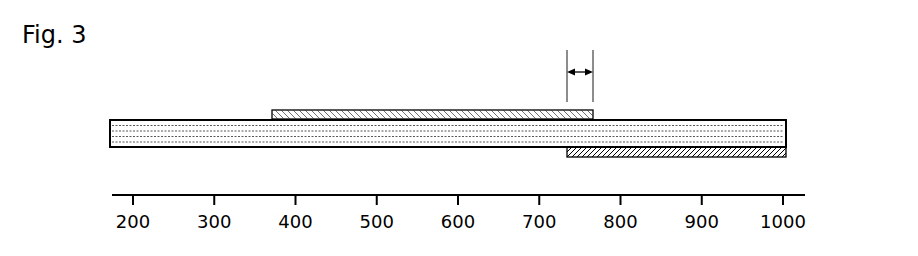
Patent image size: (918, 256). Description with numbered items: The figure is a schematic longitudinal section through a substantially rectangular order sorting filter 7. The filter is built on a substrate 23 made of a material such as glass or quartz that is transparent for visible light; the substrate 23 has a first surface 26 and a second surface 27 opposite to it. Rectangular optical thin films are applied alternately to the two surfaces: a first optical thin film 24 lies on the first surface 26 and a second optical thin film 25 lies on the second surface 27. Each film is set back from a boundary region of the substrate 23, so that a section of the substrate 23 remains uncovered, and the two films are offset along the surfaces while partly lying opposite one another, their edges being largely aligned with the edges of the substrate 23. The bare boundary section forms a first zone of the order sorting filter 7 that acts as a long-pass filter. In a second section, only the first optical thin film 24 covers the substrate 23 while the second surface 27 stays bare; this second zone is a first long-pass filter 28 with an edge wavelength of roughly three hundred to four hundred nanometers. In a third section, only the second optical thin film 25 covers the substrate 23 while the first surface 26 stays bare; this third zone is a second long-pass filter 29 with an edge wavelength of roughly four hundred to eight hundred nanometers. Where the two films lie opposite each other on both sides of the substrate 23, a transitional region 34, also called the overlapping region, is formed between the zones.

The order sorting filter 7 is at (445, 103).
The substrate 23 is at (448, 98).
The first optical thin film 24 is at (432, 84).
The second optical thin film 25 is at (448, 96).
The first surface 26 is at (660, 111).
The second surface 27 is at (770, 138).
The first long-pass filter 28 is at (483, 106).
The second long-pass filter 29 is at (628, 141).
The transitional region 34 is at (580, 76).